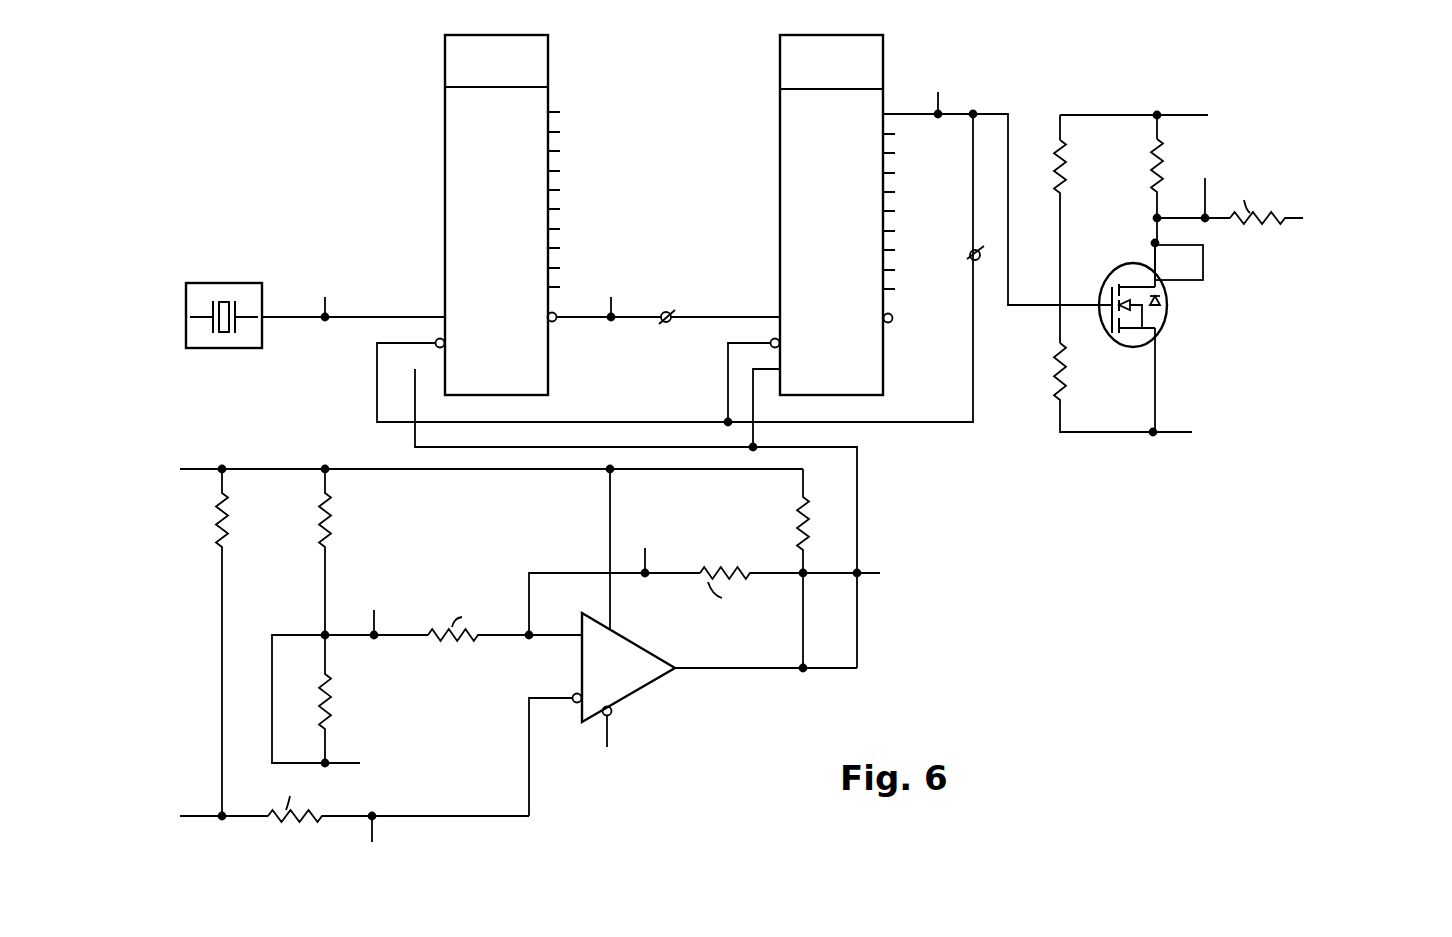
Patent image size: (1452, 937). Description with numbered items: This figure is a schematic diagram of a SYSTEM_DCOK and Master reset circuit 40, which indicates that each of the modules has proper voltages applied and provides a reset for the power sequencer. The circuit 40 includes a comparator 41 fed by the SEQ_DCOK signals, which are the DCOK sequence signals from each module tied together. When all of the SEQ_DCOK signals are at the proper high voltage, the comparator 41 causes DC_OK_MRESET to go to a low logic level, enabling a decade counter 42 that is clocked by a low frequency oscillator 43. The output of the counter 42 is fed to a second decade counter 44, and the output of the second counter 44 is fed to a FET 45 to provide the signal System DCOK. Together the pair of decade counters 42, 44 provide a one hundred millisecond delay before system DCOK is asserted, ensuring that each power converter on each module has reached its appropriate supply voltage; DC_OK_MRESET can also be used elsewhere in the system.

The SYSTEM_DCOK and Master reset circuit 40 is at (312, 186).
The comparator 41 is at (633, 639).
The counter 42 is at (445, 132).
The low frequency oscillator 43 is at (200, 283).
The second counter 44 is at (780, 136).
The FET transistor 45 is at (1184, 336).